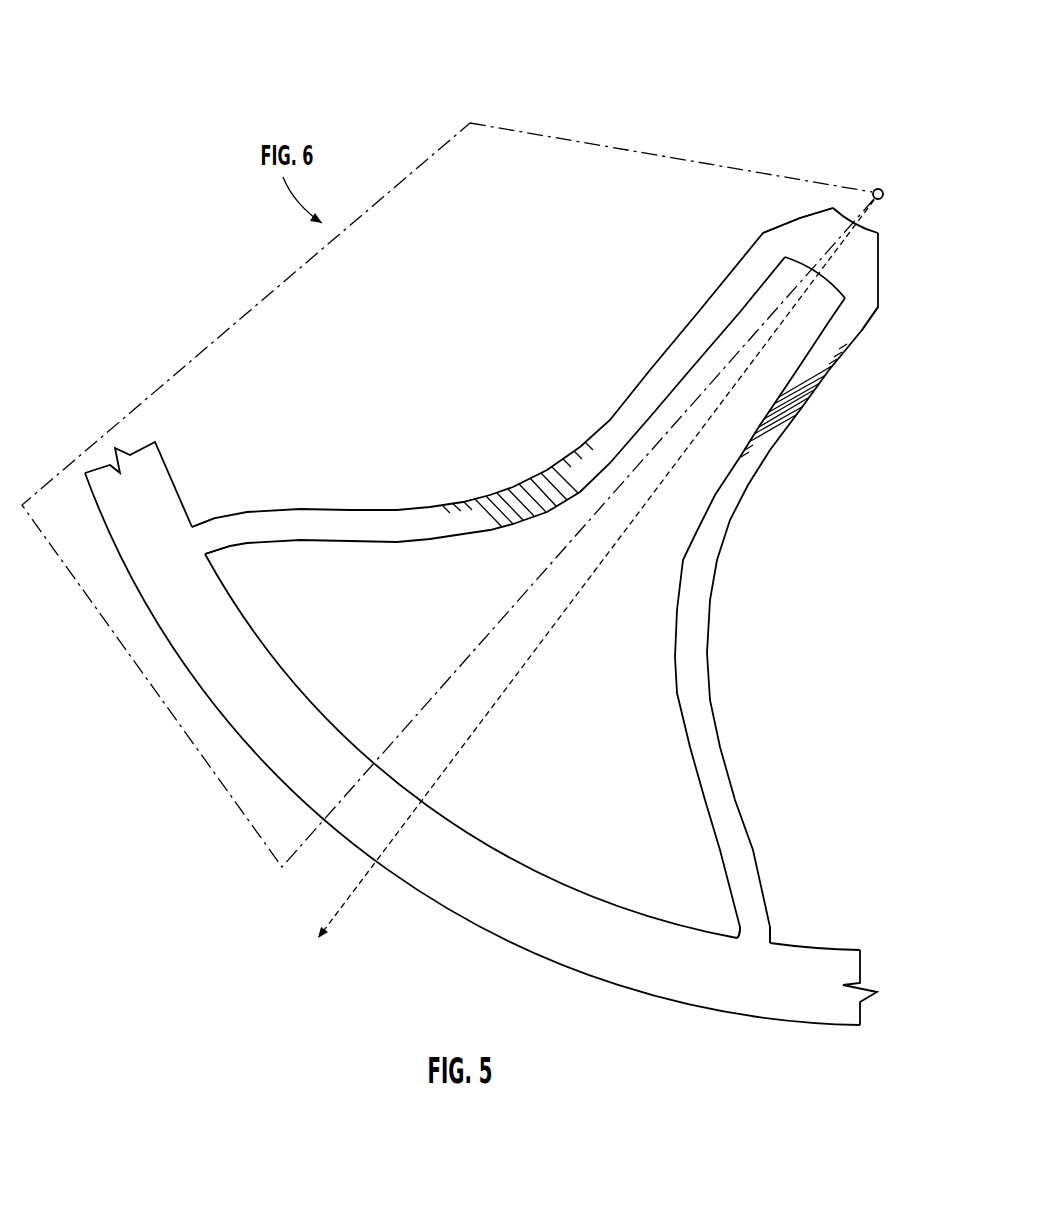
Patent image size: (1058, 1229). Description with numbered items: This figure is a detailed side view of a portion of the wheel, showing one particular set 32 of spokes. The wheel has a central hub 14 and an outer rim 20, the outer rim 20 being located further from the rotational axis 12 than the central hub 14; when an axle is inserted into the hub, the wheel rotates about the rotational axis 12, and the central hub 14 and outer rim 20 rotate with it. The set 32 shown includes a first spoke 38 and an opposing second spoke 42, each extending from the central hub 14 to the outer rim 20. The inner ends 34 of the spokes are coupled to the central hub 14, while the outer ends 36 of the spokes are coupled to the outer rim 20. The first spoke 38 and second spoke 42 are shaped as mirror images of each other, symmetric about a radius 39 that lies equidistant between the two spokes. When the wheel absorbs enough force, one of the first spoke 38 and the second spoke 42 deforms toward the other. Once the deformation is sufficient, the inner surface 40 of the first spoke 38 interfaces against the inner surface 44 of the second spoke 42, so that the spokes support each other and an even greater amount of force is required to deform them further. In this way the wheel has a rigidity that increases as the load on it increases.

The rotational axis 12 is at (878, 177).
The central hub 14 is at (825, 223).
The outer rim 20 is at (725, 980).
The spoke set 32 is at (427, 90).
The inner ends 34 is at (750, 243).
The outer ends 36 is at (212, 527).
The first spoke 38 is at (607, 418).
The radius 39 is at (513, 708).
The inner surface of first spoke 40 is at (703, 375).
The second spoke 42 is at (733, 578).
The inner surface of second spoke 44 is at (745, 423).